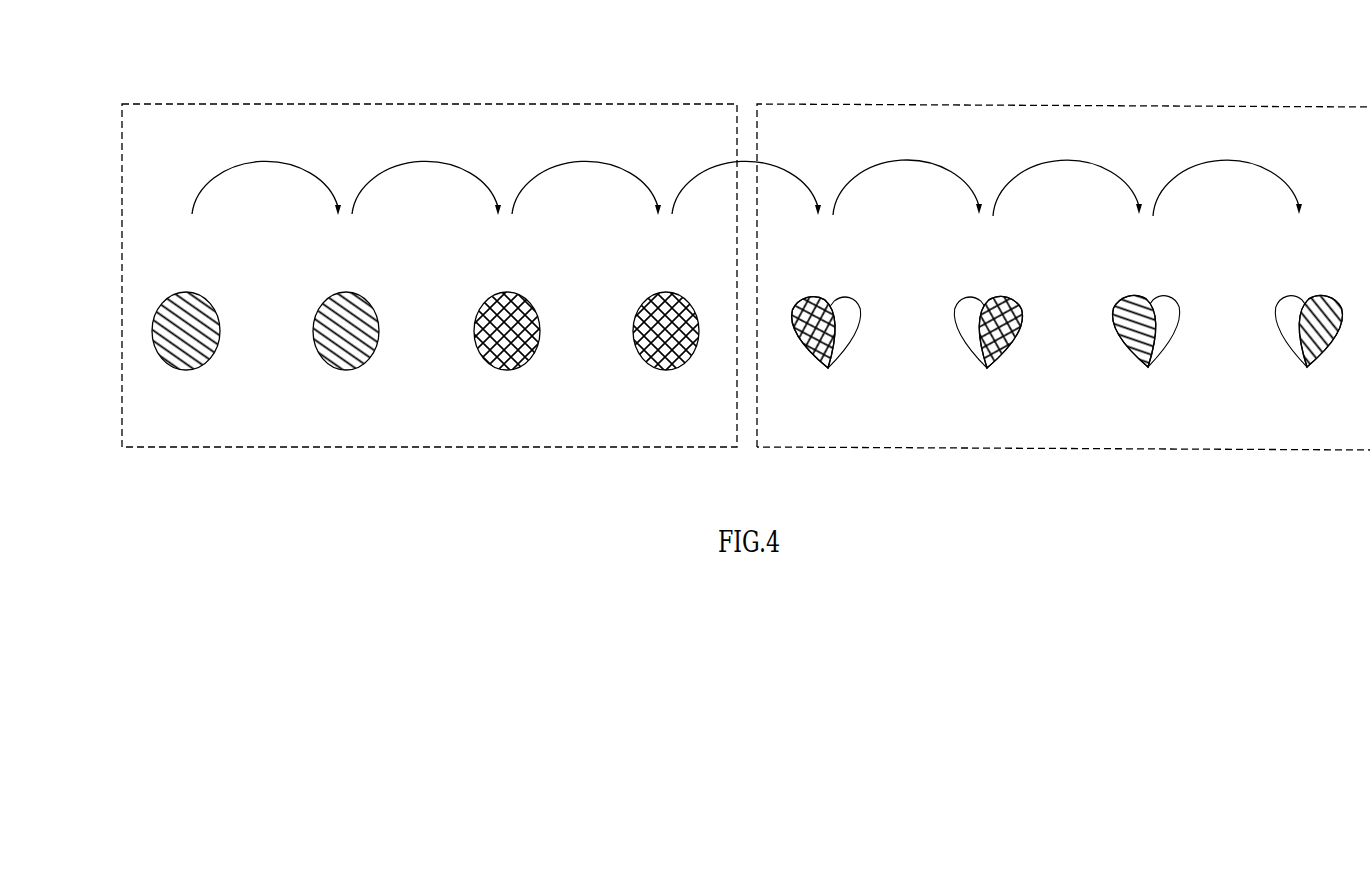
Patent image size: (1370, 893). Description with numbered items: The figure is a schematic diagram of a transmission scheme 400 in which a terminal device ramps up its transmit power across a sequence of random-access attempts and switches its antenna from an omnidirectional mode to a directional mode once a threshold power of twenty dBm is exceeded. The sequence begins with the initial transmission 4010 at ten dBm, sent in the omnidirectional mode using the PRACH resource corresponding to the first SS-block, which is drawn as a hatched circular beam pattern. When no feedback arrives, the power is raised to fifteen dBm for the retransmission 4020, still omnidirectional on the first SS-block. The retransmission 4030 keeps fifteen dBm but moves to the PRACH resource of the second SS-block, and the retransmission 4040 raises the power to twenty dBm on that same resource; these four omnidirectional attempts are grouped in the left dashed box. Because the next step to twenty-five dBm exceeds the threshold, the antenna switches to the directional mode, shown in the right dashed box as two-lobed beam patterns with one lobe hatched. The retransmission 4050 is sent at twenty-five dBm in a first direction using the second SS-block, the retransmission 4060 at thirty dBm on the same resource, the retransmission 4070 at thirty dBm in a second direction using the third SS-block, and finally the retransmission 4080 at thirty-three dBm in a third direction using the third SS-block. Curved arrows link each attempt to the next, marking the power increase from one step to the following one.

The beam sweeping / power ramping sequence 400 is at (260, 90).
The initial transmission 4010 is at (183, 370).
The retransmission 4020 is at (343, 370).
The retransmission 4030 is at (505, 370).
The retransmission 4040 is at (661, 370).
The retransmission 4050 is at (828, 368).
The retransmission 4060 is at (987, 368).
The retransmission 4070 is at (1148, 367).
The retransmission 4080 is at (1307, 367).